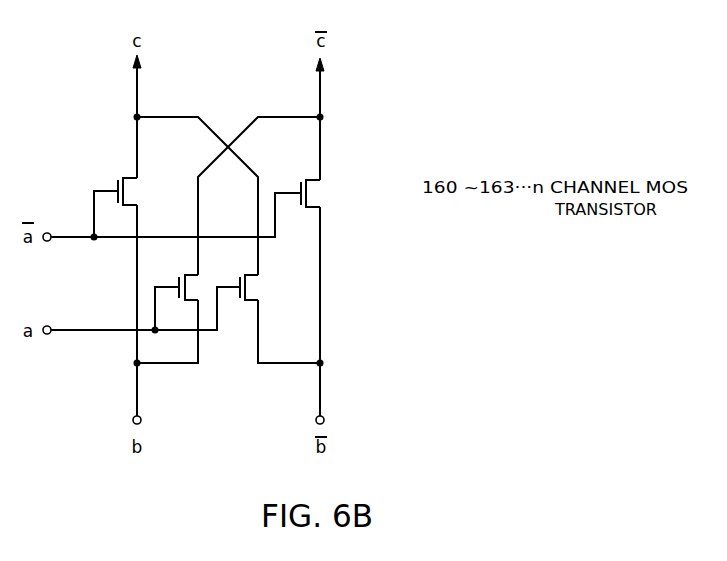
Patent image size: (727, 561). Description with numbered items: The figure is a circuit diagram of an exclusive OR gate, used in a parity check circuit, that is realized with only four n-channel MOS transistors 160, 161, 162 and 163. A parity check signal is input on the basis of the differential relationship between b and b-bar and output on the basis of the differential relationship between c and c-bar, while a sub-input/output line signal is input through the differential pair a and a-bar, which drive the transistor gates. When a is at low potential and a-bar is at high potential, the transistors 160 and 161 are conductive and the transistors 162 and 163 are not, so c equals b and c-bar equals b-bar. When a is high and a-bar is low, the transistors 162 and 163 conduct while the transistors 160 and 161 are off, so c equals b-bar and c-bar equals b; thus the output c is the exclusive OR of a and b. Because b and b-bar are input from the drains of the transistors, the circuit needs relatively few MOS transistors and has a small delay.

The n-channel MOS transistor 160 is at (133, 190).
The n-channel MOS transistor 161 is at (313, 192).
The n-channel MOS transistor 162 is at (198, 282).
The n-channel MOS transistor 163 is at (255, 286).